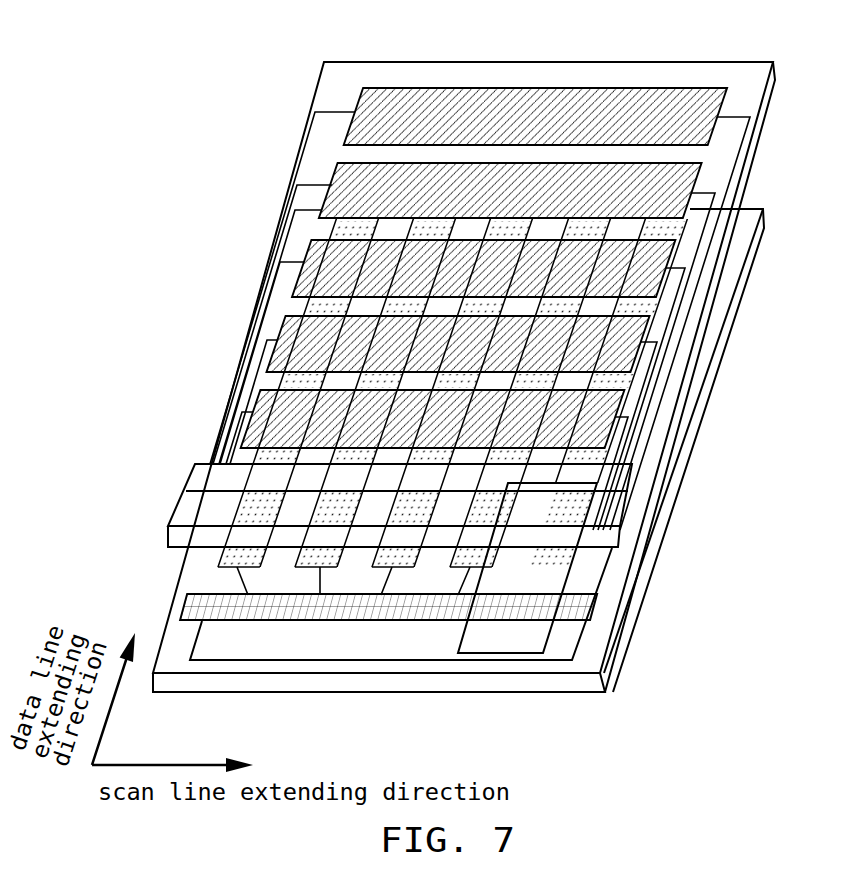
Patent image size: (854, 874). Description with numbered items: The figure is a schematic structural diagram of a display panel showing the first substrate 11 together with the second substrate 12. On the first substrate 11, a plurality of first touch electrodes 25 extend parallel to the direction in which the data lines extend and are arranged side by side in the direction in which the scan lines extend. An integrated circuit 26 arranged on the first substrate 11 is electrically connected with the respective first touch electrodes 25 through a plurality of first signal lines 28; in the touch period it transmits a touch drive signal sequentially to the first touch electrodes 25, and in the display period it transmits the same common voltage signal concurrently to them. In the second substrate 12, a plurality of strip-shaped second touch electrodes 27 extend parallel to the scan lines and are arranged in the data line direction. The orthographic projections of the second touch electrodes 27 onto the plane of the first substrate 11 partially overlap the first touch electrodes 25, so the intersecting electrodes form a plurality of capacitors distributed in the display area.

The first substrate 11 is at (745, 266).
The second substrate 12 is at (775, 63).
The first touch electrode 25 is at (238, 554).
The integrated circuit 26 is at (185, 605).
The second touch electrode 27 is at (437, 97).
The first signal line 28 is at (238, 578).